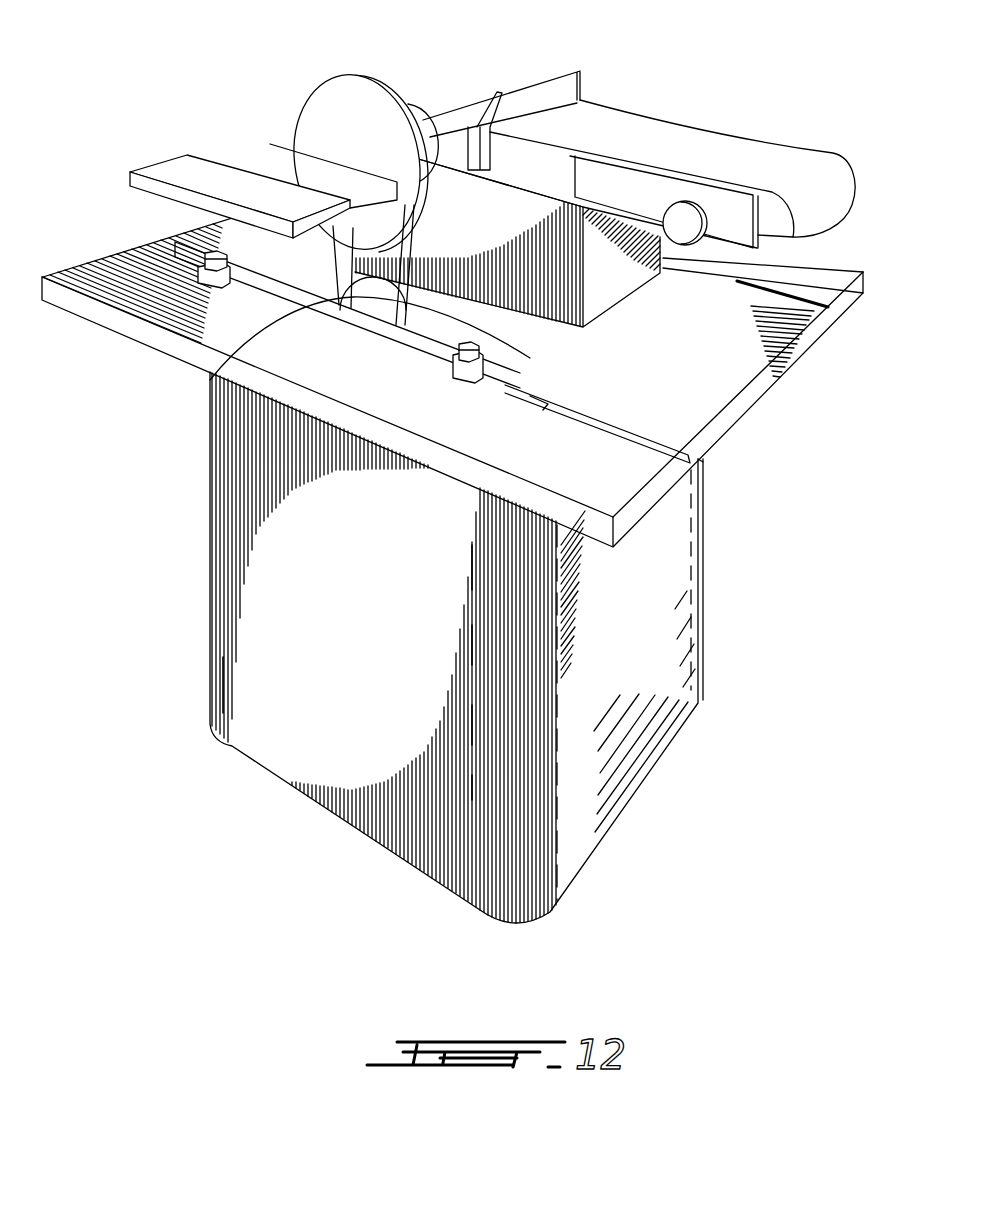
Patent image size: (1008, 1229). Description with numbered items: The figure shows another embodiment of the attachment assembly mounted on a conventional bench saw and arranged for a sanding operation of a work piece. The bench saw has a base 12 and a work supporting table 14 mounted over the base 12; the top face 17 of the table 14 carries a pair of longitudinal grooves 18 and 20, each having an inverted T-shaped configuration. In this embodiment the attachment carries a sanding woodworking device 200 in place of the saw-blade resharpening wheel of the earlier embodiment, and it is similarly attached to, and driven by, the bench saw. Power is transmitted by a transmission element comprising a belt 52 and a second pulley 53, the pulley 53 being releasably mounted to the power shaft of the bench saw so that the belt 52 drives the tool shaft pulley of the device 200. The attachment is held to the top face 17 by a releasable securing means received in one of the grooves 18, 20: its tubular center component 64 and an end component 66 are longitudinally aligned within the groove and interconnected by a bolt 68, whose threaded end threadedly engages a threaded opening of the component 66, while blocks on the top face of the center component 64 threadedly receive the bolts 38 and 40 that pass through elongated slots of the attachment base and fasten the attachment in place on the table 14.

The base 12 is at (706, 630).
The work supporting table 14 is at (846, 268).
The top face 17 is at (708, 375).
The longitudinal groove 18 is at (826, 318).
The longitudinal groove 20 is at (700, 460).
The bolt 38 is at (462, 378).
The bolt 40 is at (217, 252).
The belt 52 is at (408, 250).
The second pulley 53 is at (210, 378).
The center component 64 is at (395, 345).
The component 66 is at (195, 268).
The bolt 68 is at (545, 403).
The woodworking device 200 is at (327, 108).